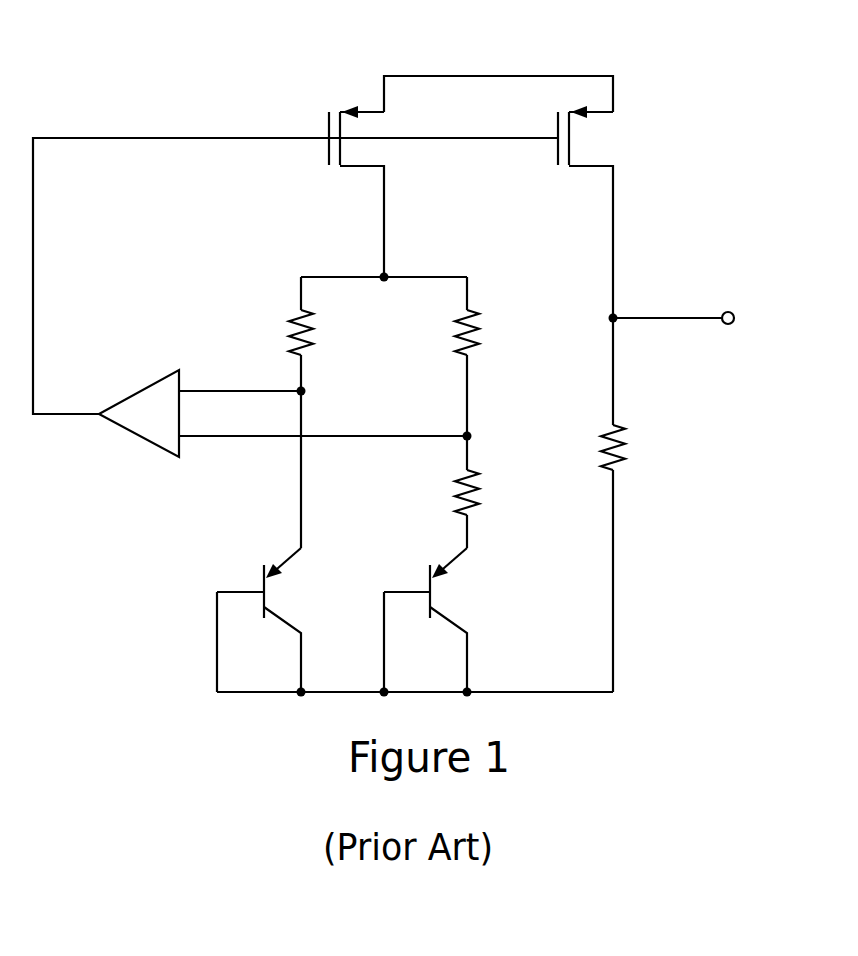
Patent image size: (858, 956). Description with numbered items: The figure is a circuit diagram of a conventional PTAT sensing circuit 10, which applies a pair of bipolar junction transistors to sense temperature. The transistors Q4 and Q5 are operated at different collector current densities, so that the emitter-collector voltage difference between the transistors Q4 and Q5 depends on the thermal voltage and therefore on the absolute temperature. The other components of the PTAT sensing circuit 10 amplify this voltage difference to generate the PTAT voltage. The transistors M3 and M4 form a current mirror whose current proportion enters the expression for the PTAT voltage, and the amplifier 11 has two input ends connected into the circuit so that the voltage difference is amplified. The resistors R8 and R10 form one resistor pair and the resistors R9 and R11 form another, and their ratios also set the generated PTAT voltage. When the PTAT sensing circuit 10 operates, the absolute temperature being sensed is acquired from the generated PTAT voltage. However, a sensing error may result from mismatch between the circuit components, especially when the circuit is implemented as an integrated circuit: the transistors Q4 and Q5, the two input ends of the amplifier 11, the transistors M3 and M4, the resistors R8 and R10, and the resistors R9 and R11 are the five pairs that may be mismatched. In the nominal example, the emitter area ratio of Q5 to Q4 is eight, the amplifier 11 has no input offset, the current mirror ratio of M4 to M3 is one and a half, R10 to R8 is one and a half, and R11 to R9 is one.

The PTAT sensing circuit 10 is at (683, 727).
The amplifier 11 is at (127, 388).
The transistor M3 is at (382, 191).
The transistor M4 is at (611, 212).
The resistor R8 is at (322, 334).
The resistor R9 is at (489, 492).
The resistor R10 is at (498, 356).
The resistor R11 is at (641, 505).
The transistor Q4 is at (272, 620).
The transistor Q5 is at (438, 620).